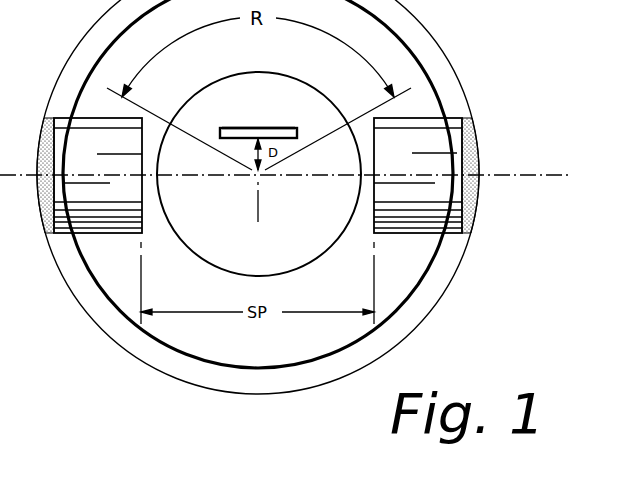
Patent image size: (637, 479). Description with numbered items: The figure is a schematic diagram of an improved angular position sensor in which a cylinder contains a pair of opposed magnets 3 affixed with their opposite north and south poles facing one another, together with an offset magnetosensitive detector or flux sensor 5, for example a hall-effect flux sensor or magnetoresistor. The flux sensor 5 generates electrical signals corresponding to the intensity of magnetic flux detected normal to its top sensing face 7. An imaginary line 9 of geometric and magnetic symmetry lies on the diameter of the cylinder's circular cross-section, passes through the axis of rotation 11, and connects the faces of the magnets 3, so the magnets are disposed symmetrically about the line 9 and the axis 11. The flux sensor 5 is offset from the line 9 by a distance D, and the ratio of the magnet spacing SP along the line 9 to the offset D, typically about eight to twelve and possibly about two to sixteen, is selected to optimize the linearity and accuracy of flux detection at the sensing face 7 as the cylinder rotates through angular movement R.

The magnets 3 is at (82, 118).
The flux sensor 5 is at (297, 133).
The top sensing face 7 is at (240, 128).
The line of geometric and magnetic symmetry 9 is at (213, 178).
The axis of rotation 11 is at (259, 178).